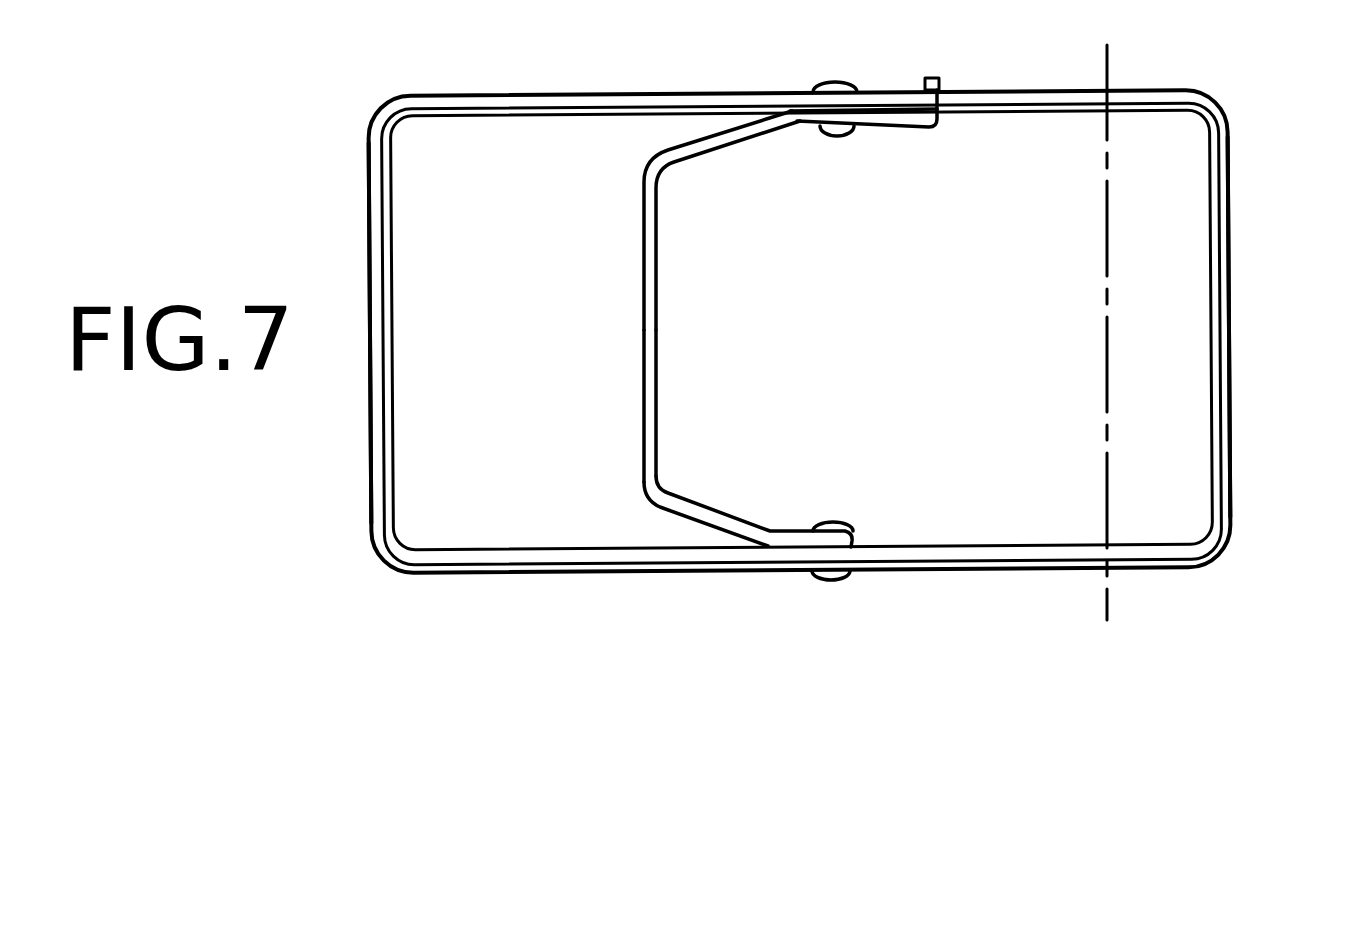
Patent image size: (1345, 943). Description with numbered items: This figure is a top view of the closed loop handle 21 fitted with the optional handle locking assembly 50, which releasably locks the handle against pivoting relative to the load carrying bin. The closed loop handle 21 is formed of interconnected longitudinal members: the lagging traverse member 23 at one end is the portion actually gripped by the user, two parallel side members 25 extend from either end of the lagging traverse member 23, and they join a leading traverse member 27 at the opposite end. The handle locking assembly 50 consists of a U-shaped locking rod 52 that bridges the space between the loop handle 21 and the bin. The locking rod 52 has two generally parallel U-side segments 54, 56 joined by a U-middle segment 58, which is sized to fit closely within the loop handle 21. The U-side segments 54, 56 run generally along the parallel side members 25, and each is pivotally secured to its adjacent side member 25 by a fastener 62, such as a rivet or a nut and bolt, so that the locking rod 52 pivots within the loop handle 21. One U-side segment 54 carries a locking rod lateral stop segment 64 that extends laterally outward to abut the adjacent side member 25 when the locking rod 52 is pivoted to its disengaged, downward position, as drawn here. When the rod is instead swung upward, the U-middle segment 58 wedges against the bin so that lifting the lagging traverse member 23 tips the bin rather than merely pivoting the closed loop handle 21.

The closed loop handle 21 is at (295, 230).
The lagging traverse member 23 is at (372, 472).
The parallel side members 25 is at (608, 100).
The leading traverse member 27 is at (1230, 424).
The handle locking assembly 50 is at (580, 298).
The U-shaped locking rod 52 is at (643, 208).
The U-side segment 54 is at (736, 146).
The U-side segment 56 is at (721, 518).
The U-middle segment 58 is at (641, 399).
The fastener 62 is at (843, 137).
The locking rod lateral stop segment 64 is at (940, 80).